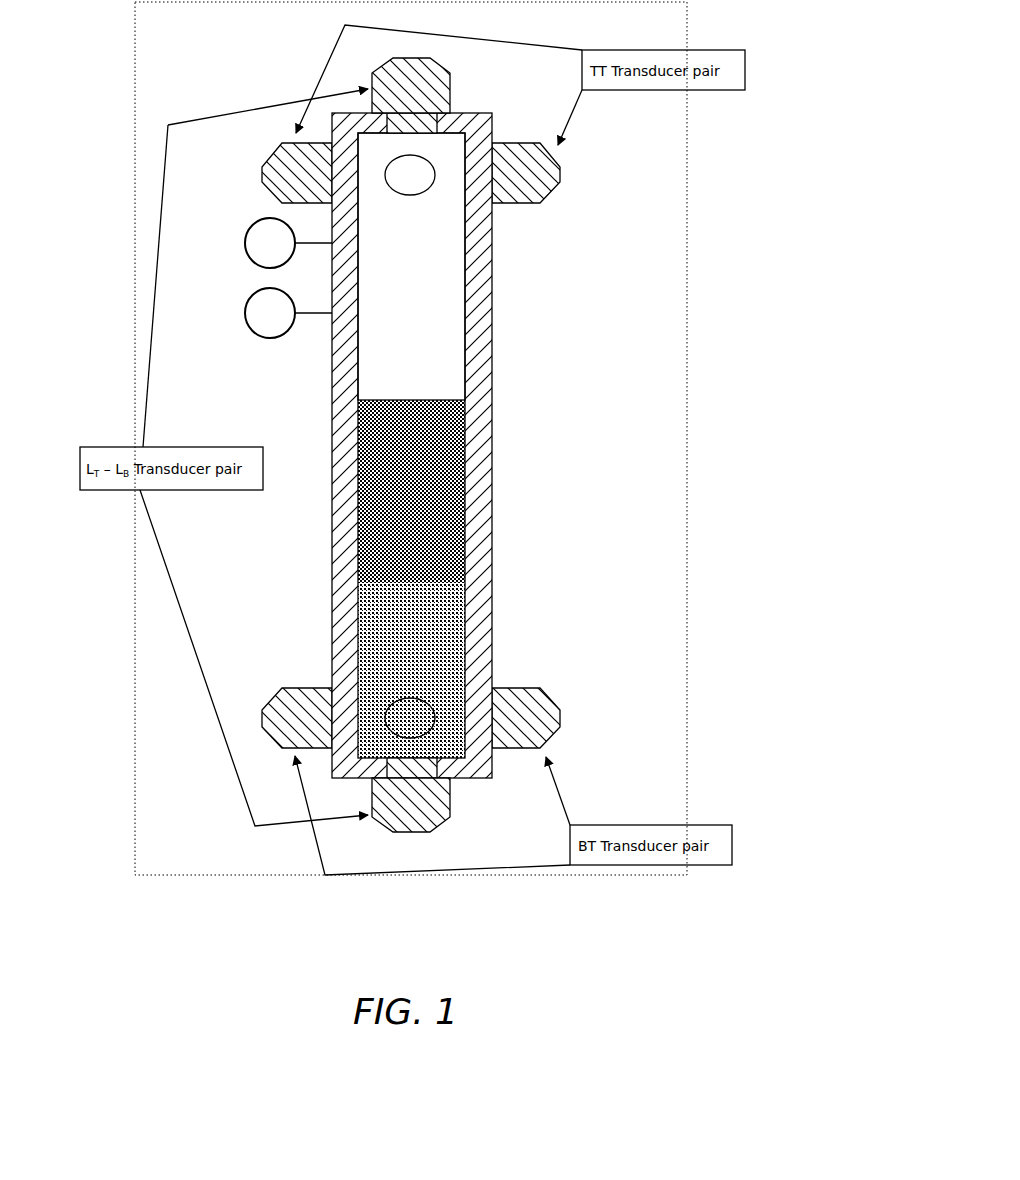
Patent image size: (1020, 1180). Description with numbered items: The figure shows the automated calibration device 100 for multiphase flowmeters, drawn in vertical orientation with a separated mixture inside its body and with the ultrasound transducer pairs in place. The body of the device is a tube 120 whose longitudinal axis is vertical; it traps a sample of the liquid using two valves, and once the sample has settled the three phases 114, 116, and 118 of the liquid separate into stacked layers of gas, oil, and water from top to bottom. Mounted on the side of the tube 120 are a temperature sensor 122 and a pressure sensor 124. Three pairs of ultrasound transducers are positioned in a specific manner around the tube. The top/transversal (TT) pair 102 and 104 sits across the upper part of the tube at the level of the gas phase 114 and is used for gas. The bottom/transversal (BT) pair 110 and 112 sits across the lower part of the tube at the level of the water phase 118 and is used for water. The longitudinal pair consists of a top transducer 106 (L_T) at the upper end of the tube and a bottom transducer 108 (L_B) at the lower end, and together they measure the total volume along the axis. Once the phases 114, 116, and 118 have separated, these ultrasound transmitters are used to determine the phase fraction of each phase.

The device 100 is at (160, 64).
The top/transversal ultrasound transducer 102 is at (566, 180).
The top/transversal ultrasound transducer 104 is at (260, 188).
The top longitudinal ultrasound transducer 106 is at (452, 93).
The bottom longitudinal ultrasound transducer 108 is at (452, 788).
The bottom/transversal ultrasound transducer 110 is at (566, 713).
The bottom/transversal ultrasound transducer 112 is at (290, 686).
The phase 114 is at (448, 317).
The phase 116 is at (448, 467).
The phase 118 is at (448, 632).
The tube 120 is at (360, 391).
The temperature sensor 122 is at (246, 243).
The pressure sensor 124 is at (246, 313).